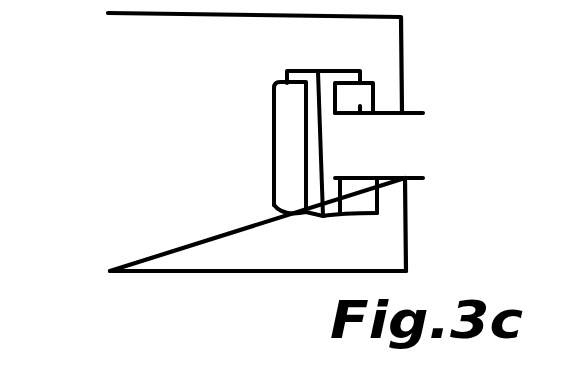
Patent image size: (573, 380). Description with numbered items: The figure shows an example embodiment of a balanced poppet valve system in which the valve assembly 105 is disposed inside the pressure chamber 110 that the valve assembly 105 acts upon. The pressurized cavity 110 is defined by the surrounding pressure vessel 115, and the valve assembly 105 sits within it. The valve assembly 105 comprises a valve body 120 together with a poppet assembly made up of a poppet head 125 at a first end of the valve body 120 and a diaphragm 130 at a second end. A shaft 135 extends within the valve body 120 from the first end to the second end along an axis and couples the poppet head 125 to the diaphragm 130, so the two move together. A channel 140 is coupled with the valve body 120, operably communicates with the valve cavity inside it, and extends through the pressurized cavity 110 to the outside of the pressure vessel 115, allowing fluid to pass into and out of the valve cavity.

The valve assembly 105 is at (333, 163).
The pressurized cavity 110 is at (126, 56).
The pressure vessel 115 is at (110, 258).
The valve body 120 is at (382, 97).
The poppet head 125 is at (285, 70).
The diaphragm 130 is at (297, 217).
The shaft 135 is at (323, 147).
The channel 140 is at (423, 113).